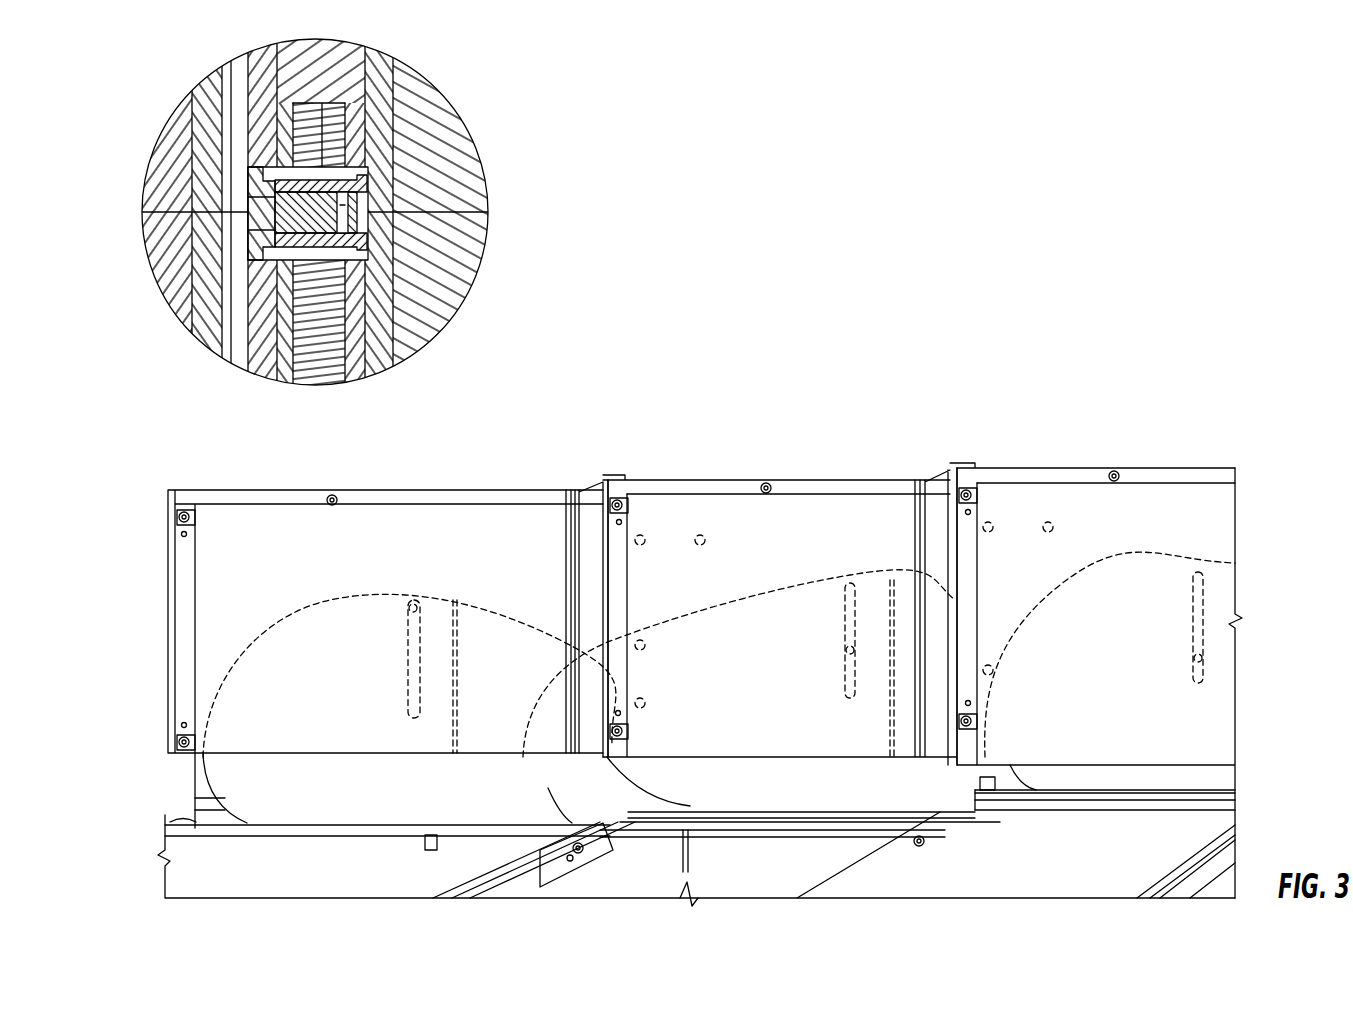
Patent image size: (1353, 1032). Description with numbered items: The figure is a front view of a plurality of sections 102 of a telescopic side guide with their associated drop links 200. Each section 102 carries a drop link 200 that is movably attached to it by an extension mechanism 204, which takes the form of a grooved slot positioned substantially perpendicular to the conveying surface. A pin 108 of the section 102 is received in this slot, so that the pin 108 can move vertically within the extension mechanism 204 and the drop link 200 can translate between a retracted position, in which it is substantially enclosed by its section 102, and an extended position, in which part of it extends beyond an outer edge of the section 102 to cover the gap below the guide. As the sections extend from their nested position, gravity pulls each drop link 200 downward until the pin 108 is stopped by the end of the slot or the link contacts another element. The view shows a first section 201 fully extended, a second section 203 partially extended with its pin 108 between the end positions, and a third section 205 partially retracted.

The section 102 is at (554, 484).
The pin 108 is at (337, 215).
The drop link 200 is at (333, 787).
The first section 201 is at (178, 550).
The second section 203 is at (726, 476).
The extension mechanism 204 is at (322, 368).
The third section 205 is at (1232, 520).